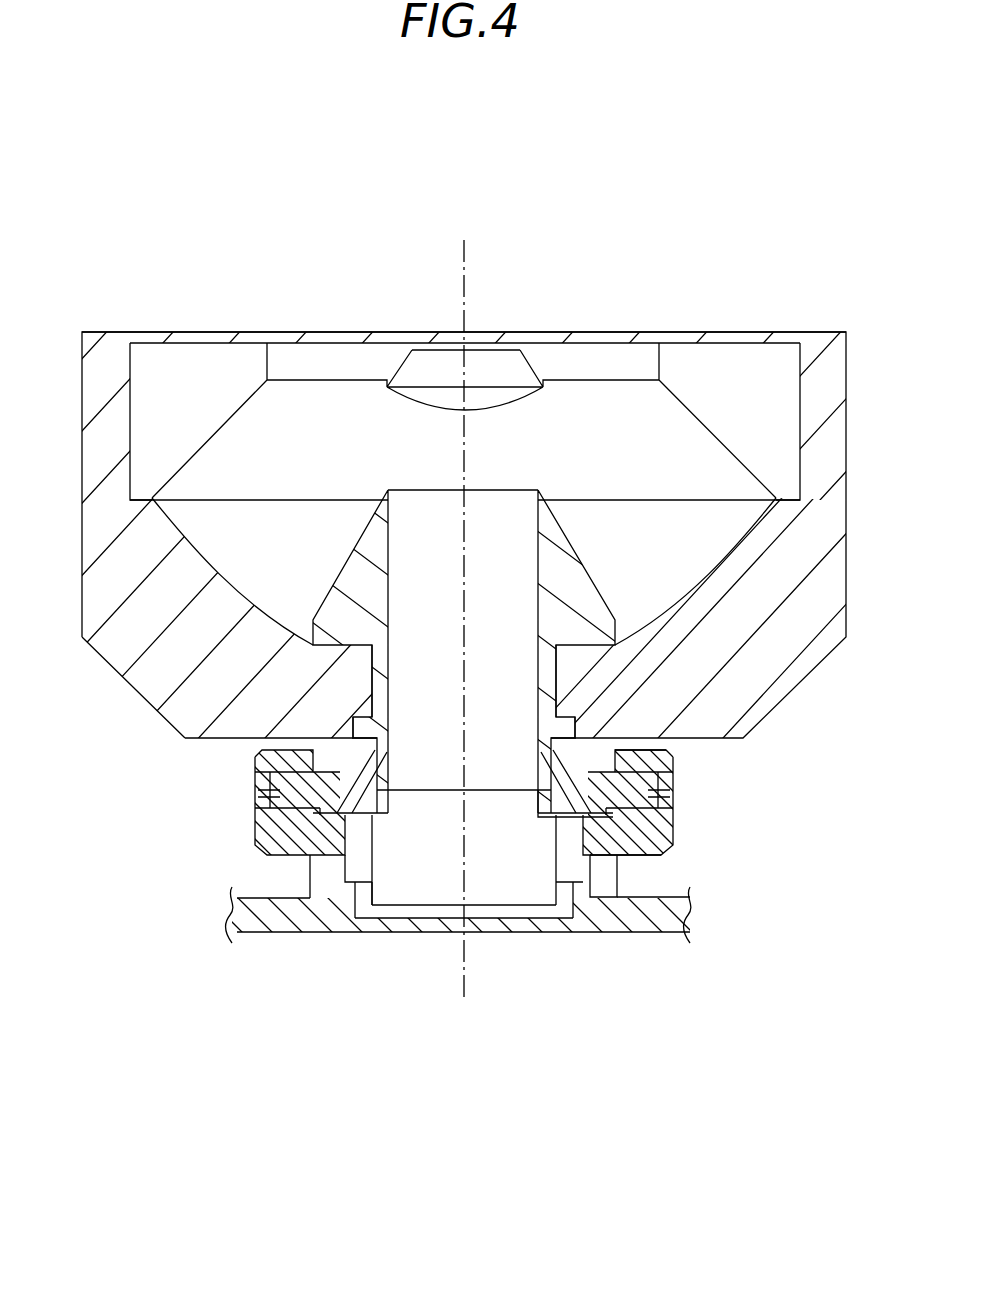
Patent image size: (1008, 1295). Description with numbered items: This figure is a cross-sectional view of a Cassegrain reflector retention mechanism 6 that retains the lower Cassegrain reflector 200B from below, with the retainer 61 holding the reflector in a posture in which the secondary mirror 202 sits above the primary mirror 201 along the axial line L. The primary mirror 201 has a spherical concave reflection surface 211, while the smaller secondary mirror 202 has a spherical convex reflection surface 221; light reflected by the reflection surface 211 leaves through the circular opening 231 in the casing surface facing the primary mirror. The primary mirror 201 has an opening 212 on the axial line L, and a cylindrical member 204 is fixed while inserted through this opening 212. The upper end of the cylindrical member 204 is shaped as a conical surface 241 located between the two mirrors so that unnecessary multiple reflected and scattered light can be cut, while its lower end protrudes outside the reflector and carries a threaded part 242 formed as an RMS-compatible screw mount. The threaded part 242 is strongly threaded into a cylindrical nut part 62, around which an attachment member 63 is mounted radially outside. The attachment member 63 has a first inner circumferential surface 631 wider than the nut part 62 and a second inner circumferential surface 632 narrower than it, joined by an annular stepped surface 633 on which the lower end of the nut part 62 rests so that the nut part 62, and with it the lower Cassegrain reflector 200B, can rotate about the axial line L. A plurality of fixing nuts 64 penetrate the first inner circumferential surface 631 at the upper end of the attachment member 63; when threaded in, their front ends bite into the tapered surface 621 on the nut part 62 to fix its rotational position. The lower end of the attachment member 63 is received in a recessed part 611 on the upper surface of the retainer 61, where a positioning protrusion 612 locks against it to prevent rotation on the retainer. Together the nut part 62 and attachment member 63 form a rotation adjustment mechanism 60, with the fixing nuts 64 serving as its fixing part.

The lower Cassegrain reflector 200B is at (504, 647).
The axial line L is at (464, 250).
The primary mirror 201 is at (152, 538).
The reflection surface 211 is at (153, 498).
The reflection surface 221 is at (413, 397).
The secondary mirror 202 is at (485, 393).
The opening 231 is at (610, 337).
The conical surface 241 is at (337, 568).
The cylindrical member 204 is at (583, 563).
The opening 212 is at (370, 680).
The threaded part 242 is at (355, 760).
The first inner circumferential surface 631 is at (573, 773).
The rotation adjustment mechanism 60 is at (504, 647).
The attachment member 63 is at (290, 855).
The nut part 62 is at (345, 856).
The fixing nut 64 is at (257, 790).
The tapered surface 621 is at (673, 778).
The second inner circumferential surface 632 is at (590, 866).
The Cassegrain reflector retention mechanism 6 is at (382, 767).
The retainer 61 is at (243, 907).
The recessed part 611 is at (557, 934).
The positioning protrusion 612 is at (376, 855).
The stepped surface 633 is at (537, 800).